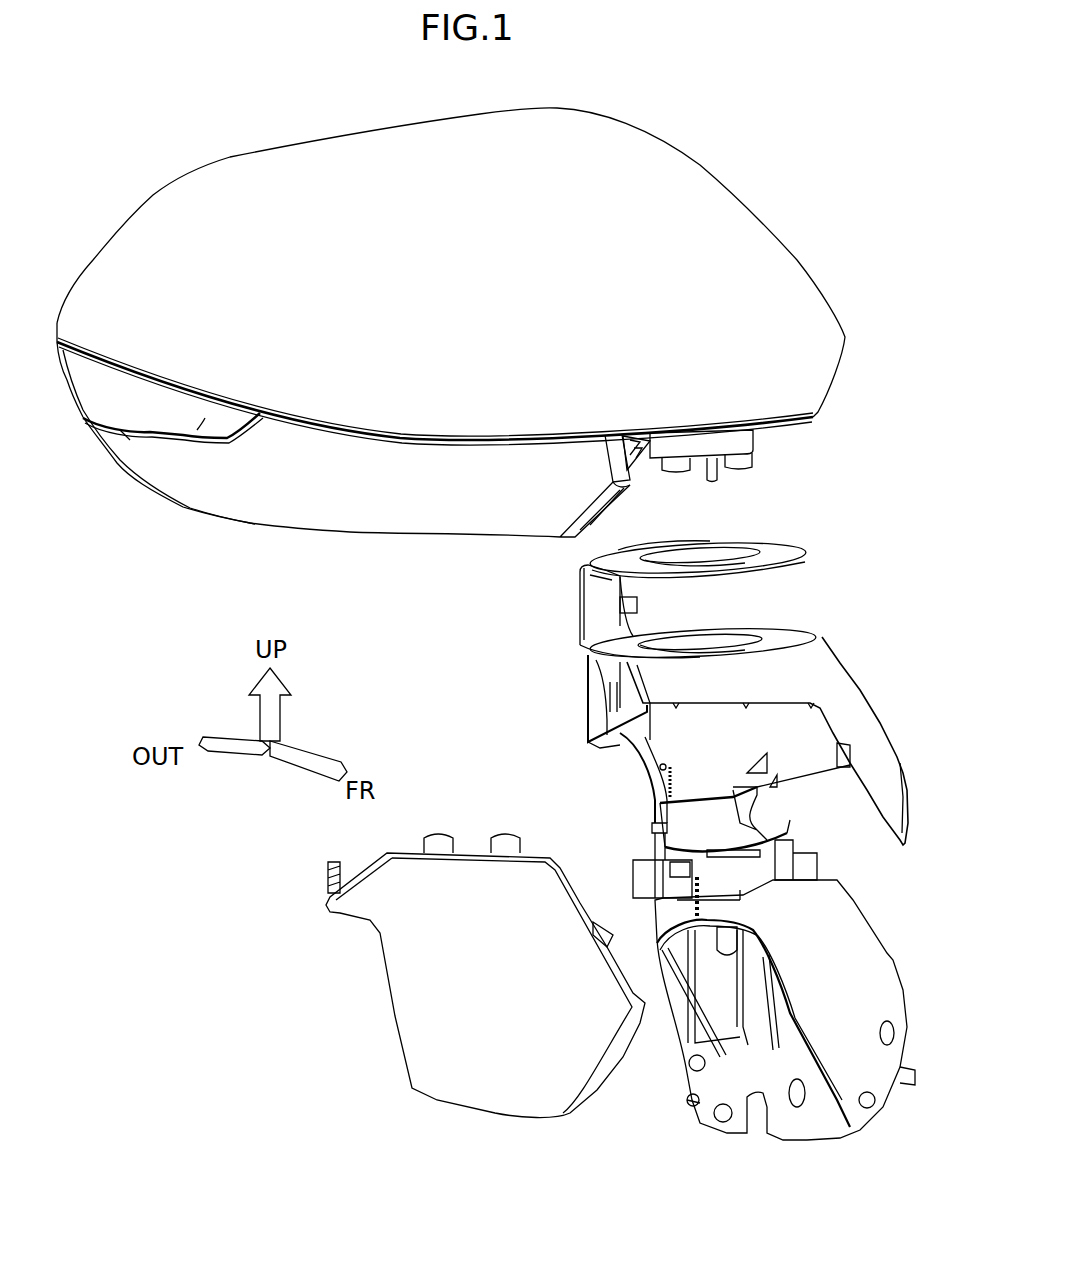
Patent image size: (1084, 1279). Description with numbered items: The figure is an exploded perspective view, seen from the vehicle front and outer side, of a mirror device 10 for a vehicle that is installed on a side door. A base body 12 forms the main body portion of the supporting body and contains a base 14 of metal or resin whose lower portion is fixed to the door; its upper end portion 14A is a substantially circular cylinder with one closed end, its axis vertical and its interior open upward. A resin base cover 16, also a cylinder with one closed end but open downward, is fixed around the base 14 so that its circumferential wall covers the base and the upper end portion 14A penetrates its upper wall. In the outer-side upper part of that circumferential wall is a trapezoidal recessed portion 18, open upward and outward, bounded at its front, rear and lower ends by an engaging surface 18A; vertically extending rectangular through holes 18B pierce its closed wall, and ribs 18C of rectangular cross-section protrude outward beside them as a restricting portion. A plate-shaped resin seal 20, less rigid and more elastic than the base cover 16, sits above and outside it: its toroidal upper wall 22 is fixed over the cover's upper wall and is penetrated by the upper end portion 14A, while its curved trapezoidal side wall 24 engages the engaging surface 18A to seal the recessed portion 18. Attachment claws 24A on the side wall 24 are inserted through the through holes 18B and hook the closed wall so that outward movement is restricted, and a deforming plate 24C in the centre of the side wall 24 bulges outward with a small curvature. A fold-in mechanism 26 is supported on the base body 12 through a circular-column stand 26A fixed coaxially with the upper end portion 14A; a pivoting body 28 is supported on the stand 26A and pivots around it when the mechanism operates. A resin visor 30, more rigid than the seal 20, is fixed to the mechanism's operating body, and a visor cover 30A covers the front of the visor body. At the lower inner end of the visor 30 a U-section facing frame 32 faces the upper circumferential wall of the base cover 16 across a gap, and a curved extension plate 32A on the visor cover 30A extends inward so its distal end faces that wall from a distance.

The mirror device for a vehicle 10 is at (776, 159).
The base body 12 is at (888, 620).
The base 14 is at (860, 912).
The upper end portion 14A is at (655, 823).
The base cover 16 is at (883, 727).
The recessed portion 18 is at (603, 687).
The engaging surface 18A is at (640, 747).
The through holes 18B is at (610, 670).
The ribs 18C is at (613, 707).
The seal 20 is at (806, 553).
The upper wall 22 is at (744, 545).
The side wall 24 is at (623, 585).
The attachment claws 24A is at (637, 605).
The deforming plate 24C is at (580, 600).
The fold-in mechanism 26 is at (776, 454).
The stand 26A is at (759, 437).
The pivoting body 28 is at (147, 195).
The visor 30 is at (797, 260).
The visor cover 30A is at (203, 517).
The facing frame 32 is at (600, 523).
The extension plate 32A is at (630, 490).